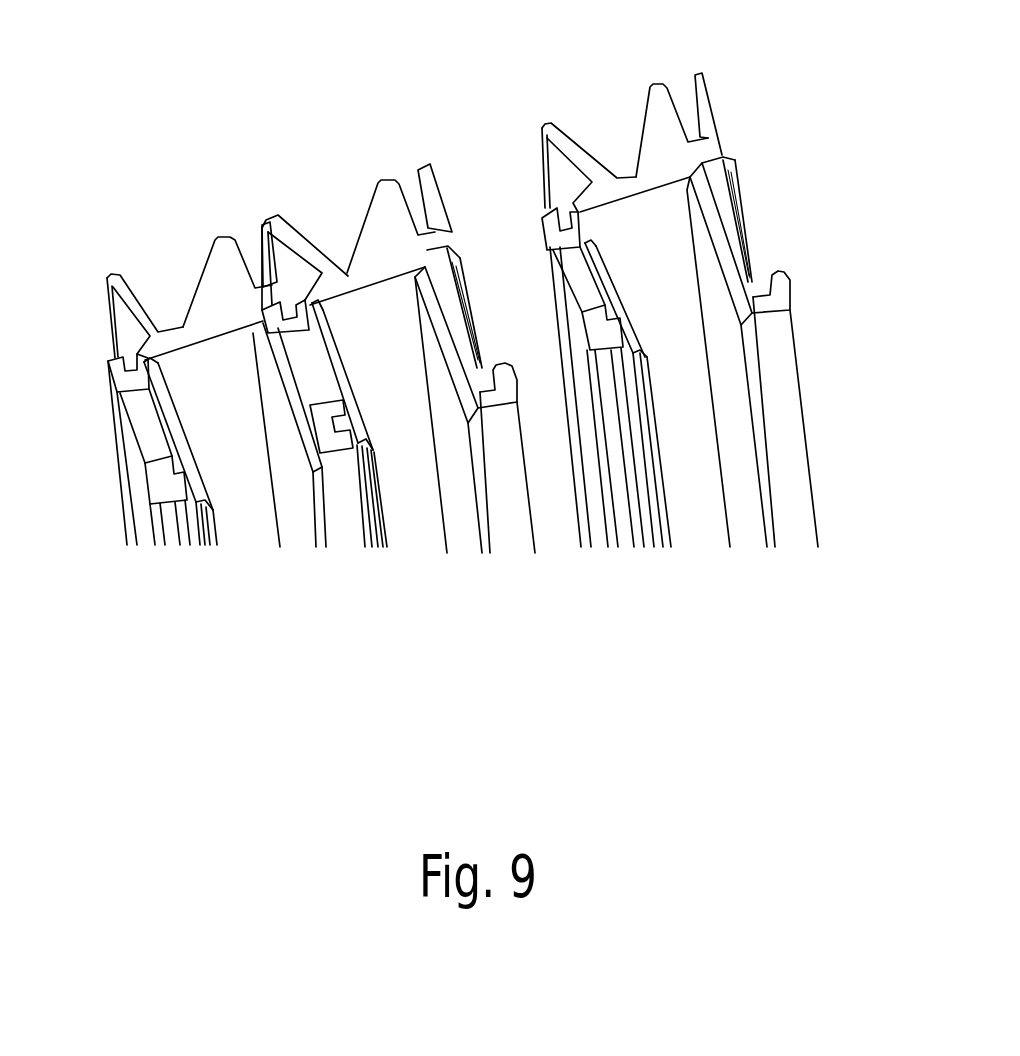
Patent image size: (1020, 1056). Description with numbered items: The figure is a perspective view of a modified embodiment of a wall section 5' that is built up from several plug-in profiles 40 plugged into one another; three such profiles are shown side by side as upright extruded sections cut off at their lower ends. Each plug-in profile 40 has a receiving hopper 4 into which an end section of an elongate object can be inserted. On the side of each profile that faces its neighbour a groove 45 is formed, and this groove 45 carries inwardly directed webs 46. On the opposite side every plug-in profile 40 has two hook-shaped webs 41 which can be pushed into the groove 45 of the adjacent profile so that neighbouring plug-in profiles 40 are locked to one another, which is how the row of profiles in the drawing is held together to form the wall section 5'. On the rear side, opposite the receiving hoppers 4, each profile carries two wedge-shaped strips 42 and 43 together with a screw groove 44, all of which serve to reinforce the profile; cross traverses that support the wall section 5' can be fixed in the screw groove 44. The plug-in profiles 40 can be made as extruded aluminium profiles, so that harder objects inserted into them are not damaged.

The receiving hopper 4 is at (420, 510).
The wall section 5' is at (166, 275).
The plug-in profile 40 is at (762, 235).
The hook-shaped web 41 is at (285, 330).
The wedge-shaped strip 42 is at (142, 307).
The wedge-shaped strip 43 is at (218, 262).
The screw groove 44 is at (253, 262).
The groove 45 is at (744, 228).
The inwardly directed web 46 is at (728, 155).